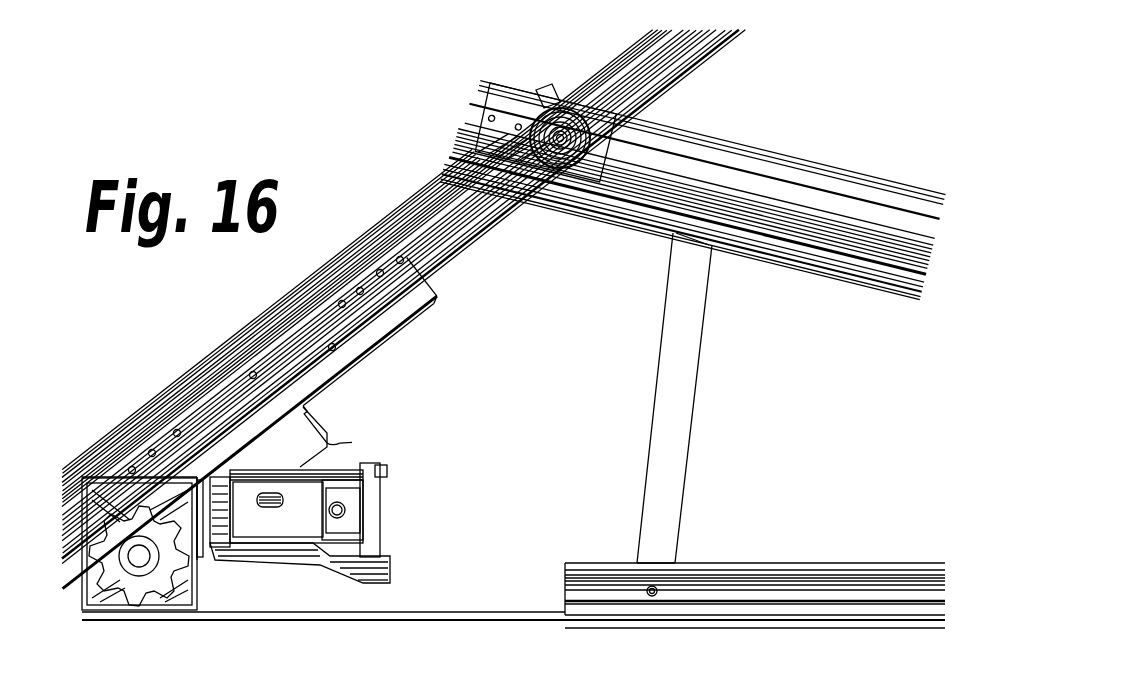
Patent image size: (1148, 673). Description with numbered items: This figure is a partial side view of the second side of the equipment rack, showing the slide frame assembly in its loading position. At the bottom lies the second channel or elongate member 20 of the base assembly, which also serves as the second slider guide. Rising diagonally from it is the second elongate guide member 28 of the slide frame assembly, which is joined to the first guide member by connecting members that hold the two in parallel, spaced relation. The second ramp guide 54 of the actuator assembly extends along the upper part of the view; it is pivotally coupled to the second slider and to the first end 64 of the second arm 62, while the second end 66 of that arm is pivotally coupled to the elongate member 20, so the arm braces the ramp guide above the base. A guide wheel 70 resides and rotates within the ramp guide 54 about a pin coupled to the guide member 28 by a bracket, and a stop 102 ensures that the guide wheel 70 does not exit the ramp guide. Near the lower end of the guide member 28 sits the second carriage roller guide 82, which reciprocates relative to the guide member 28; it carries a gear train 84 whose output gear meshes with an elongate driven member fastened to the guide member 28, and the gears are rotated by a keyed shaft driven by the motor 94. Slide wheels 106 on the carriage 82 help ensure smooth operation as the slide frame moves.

The second channel or elongate member 20 is at (790, 574).
The second elongate guide member 28 is at (233, 340).
The second ramp guide 54 is at (832, 170).
The second arm 62 is at (693, 412).
The first end of second arm 64 is at (702, 255).
The second end of second arm 66 is at (683, 540).
The guide wheel 70 is at (572, 143).
The second carriage roller guide 82 is at (382, 315).
The gear train 84 is at (117, 538).
The motor 94 is at (382, 520).
The stop 102 is at (500, 115).
The slide wheel 106 is at (337, 290).